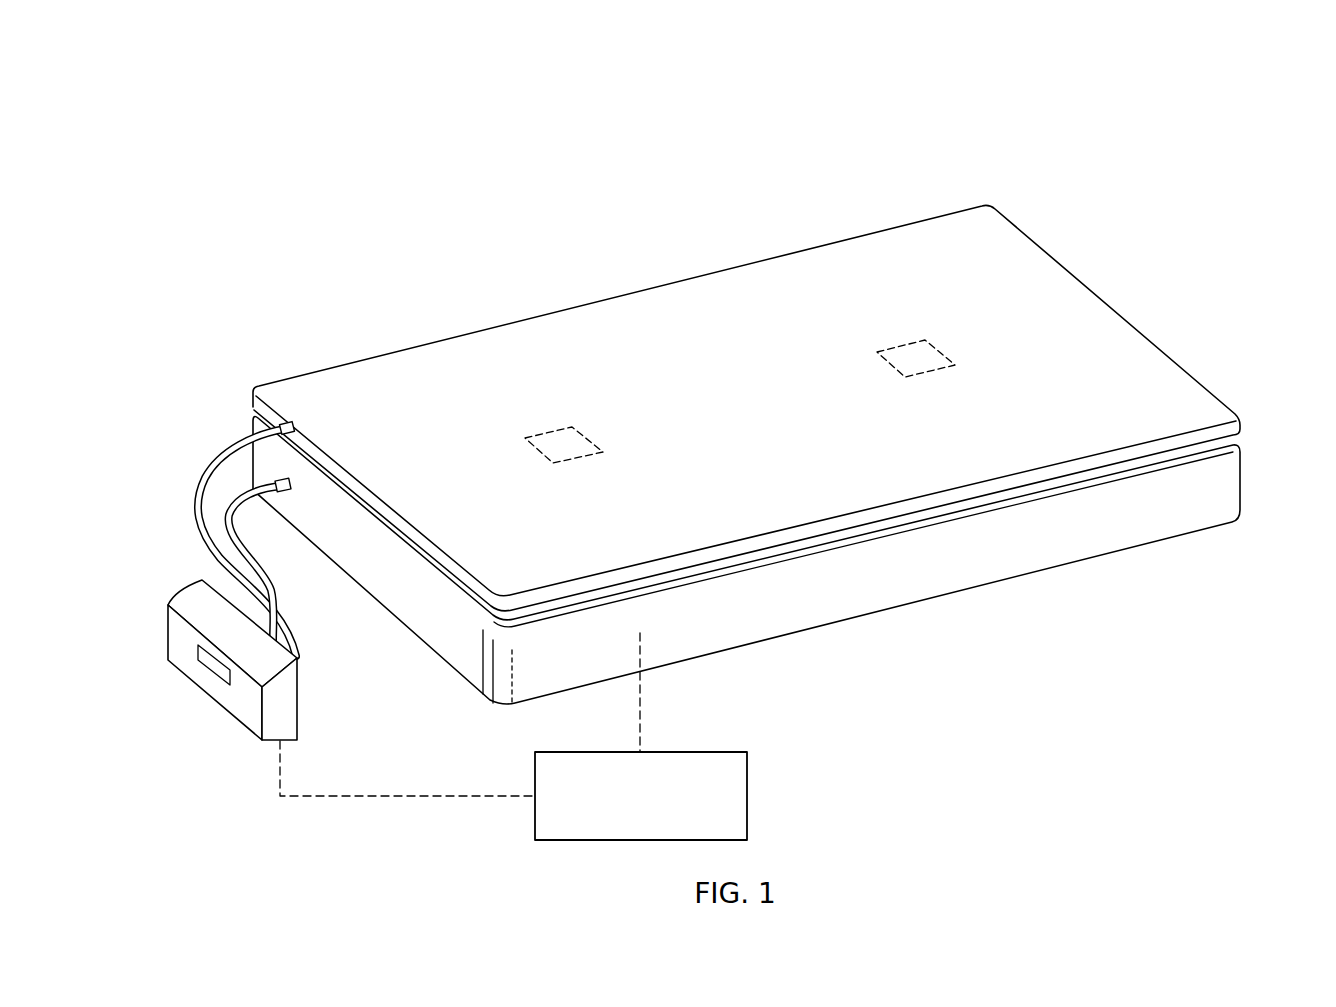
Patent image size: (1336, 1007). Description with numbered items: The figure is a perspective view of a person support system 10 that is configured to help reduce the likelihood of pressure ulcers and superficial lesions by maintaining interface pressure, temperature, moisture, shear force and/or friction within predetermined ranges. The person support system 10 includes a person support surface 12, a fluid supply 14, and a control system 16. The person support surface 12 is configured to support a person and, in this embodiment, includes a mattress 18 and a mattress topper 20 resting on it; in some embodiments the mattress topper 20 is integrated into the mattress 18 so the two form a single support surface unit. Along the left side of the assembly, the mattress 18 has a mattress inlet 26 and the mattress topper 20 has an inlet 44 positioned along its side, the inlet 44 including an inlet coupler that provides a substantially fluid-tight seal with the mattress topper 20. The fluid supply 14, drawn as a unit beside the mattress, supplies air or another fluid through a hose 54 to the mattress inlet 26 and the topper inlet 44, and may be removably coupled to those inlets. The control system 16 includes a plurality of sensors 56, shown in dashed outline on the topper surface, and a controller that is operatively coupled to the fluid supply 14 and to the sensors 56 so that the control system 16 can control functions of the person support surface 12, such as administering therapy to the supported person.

The person support system 10 is at (1098, 84).
The person support surface 12 is at (1232, 326).
The fluid supply 14 is at (247, 705).
The control system 16 is at (750, 777).
The mattress 18 is at (1057, 553).
The mattress topper 20 is at (940, 240).
The mattress inlet 26 is at (287, 492).
The inlet 44 is at (288, 422).
The hose 54 is at (230, 530).
The sensors 56 is at (546, 427).